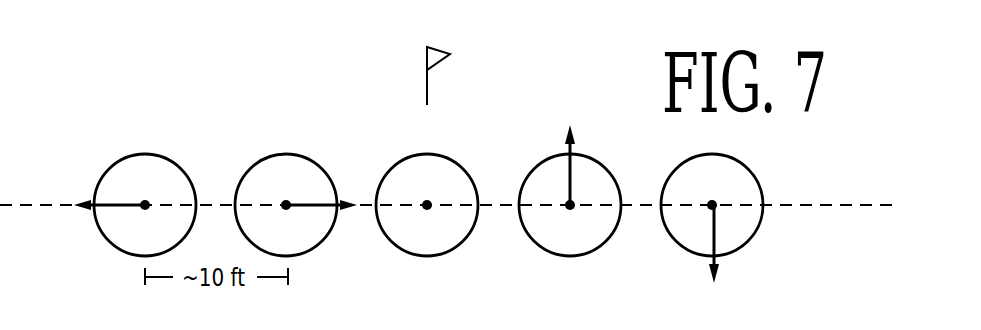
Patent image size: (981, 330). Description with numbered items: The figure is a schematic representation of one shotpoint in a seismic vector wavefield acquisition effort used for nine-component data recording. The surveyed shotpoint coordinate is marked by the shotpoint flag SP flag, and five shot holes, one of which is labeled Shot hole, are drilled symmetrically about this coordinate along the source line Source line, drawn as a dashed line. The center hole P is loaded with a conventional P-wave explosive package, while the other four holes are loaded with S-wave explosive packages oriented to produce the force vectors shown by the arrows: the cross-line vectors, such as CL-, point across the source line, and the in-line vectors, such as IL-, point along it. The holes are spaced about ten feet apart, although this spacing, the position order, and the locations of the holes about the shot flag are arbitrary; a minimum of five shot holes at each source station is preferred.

The cross-line negative force vector CL- is at (135, 205).
The P-wave shot hole P is at (427, 205).
The in-line negative force vector IL- is at (712, 218).
The shot hole Shot hole is at (224, 114).
The shotpoint flag SP flag is at (431, 56).
The source line Source line is at (448, 189).